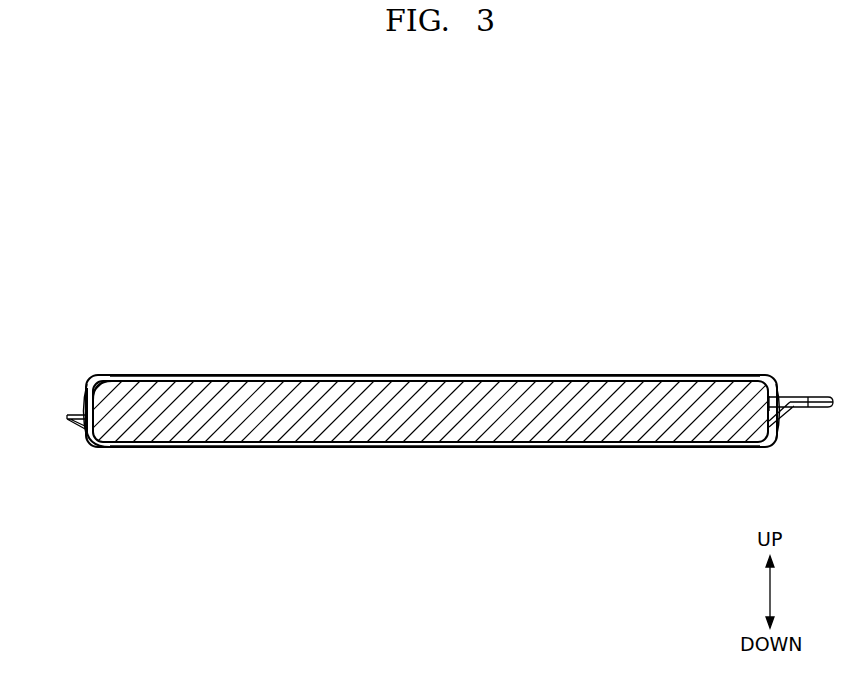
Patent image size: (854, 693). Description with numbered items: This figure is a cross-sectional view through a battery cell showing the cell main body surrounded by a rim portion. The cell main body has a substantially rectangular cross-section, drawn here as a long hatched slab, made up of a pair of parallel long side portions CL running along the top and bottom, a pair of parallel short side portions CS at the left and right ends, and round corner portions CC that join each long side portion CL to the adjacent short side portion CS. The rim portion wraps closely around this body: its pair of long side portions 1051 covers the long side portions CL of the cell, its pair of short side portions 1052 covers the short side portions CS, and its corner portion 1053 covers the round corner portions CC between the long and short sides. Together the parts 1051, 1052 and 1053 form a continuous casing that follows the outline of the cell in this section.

The short side portion CS is at (80, 403).
The round corner portion CC is at (100, 383).
The long side portion CL is at (383, 377).
The long side portion of rim portion 1051 is at (375, 448).
The short side portion of rim portion 1052 is at (82, 397).
The corner portion of rim portion 1053 is at (90, 448).